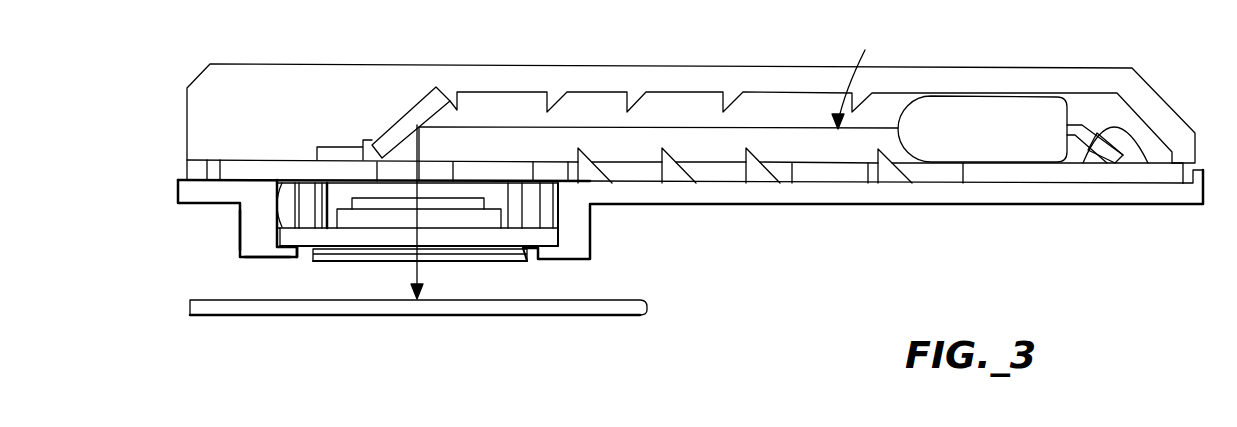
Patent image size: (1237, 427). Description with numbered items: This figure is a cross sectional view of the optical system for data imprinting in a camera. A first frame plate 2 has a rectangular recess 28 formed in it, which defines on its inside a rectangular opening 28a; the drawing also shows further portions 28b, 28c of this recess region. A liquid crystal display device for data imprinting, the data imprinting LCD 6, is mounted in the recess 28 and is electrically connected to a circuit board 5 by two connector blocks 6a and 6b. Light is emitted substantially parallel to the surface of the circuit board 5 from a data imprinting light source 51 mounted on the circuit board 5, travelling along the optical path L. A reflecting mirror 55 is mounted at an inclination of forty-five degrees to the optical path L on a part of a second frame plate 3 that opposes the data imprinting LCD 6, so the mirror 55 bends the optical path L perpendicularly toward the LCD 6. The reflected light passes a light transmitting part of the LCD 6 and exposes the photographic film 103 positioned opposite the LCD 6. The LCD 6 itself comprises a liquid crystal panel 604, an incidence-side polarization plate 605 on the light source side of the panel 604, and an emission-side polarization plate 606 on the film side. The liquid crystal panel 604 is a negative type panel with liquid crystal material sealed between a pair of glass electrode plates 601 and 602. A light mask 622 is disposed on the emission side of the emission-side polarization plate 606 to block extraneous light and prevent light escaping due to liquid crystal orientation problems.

The first frame plate 2 is at (938, 192).
The second frame plate 3 is at (703, 77).
The circuit board 5 is at (1082, 176).
The liquid crystal display (LCD) device for data imprinting 6 is at (768, 210).
The connector block 6a is at (306, 213).
The connector block 6b is at (530, 183).
The rectangular recess 28 is at (275, 180).
The rectangular opening 28a is at (303, 257).
The clamp portion 28b is at (252, 235).
The clamp portion 28c is at (285, 253).
The data imprinting light source 51 is at (977, 112).
The reflecting mirror 55 is at (413, 103).
The photographic film 103 is at (377, 307).
The glass electrode plate 601 is at (487, 220).
The glass electrode plate 602 is at (533, 240).
The liquid crystal panel 604 is at (695, 240).
The incidence-side polarization plate 605 is at (468, 203).
The emission-side polarization plate 606 is at (432, 250).
The light mask 622 is at (502, 258).
The optical path L is at (868, 74).